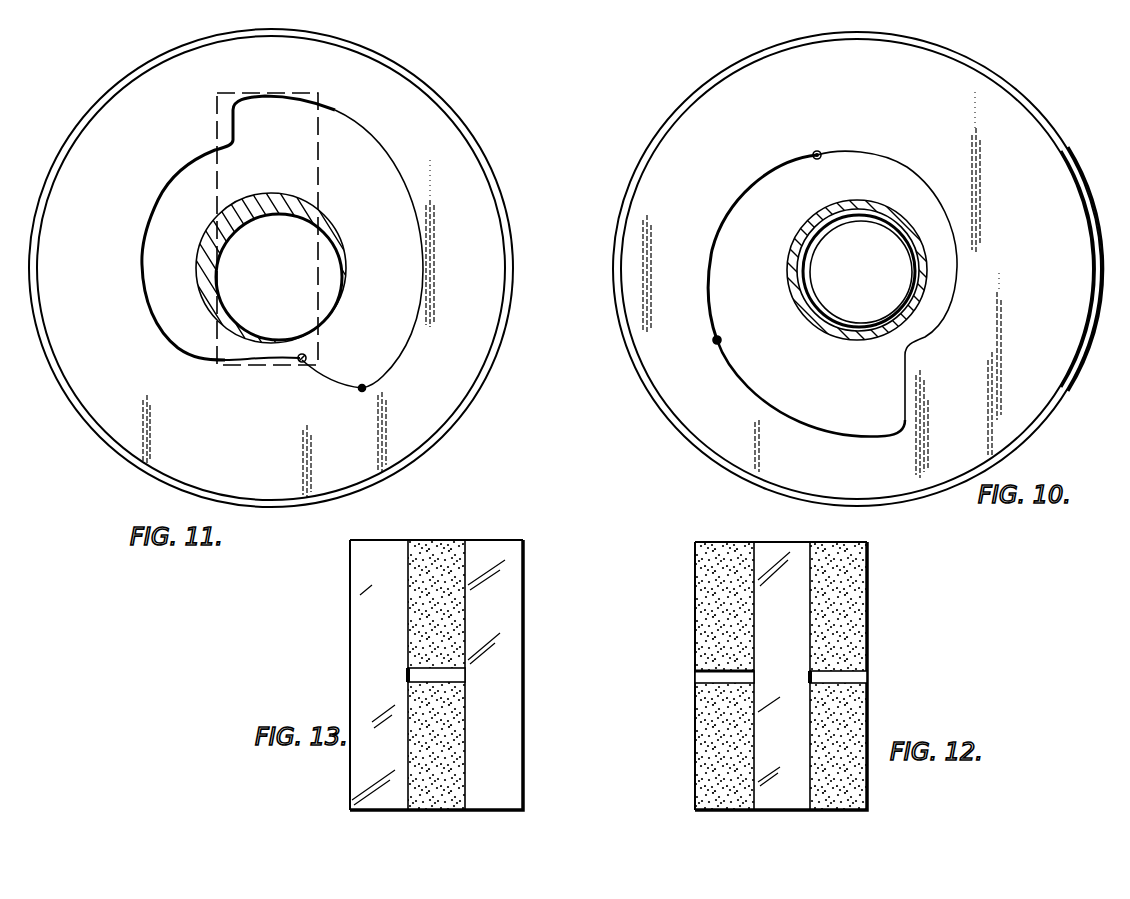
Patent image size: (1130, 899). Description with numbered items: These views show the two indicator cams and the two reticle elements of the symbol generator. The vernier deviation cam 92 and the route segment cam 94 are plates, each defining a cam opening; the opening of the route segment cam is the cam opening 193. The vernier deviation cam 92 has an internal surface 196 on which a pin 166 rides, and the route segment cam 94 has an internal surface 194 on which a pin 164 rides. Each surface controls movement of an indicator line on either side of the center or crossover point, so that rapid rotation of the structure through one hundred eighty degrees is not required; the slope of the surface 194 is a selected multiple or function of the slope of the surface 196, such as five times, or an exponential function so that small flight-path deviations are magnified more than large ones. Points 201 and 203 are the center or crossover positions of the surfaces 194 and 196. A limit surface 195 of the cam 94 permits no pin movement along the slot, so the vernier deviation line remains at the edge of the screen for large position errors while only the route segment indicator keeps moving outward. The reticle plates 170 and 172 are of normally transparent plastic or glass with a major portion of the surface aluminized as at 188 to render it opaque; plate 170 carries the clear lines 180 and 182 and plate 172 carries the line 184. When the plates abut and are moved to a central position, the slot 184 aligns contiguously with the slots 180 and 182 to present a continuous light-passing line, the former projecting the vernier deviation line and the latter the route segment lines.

In FIG. 10, the vernier deviation cam 92 is at (1050, 162).
In FIG. 11, the route segment cam 94 is at (419, 113).
In FIG. 11, the pin 164 is at (310, 353).
In FIG. 10, the pin 166 is at (822, 150).
In FIG. 12, the reticle plate 170 is at (868, 596).
In FIG. 13, the reticle plate 172 is at (505, 532).
In FIG. 10, the line 180 is at (878, 378).
In FIG. 12, the line 180 is at (694, 677).
In FIG. 12, the line 182 is at (868, 673).
In FIG. 13, the line 184 is at (465, 675).
In FIG. 13, the aluminized surface 188 is at (512, 606).
In FIG. 12, the aluminized surface 188 is at (737, 528).
In FIG. 11, the cam opening 193 is at (192, 180).
In FIG. 11, the internal surface 194 is at (406, 352).
In FIG. 11, the limit surface 195 is at (145, 305).
In FIG. 10, the internal surface 196 is at (755, 390).
In FIG. 11, the point 201 is at (358, 396).
In FIG. 10, the point 203 is at (722, 338).